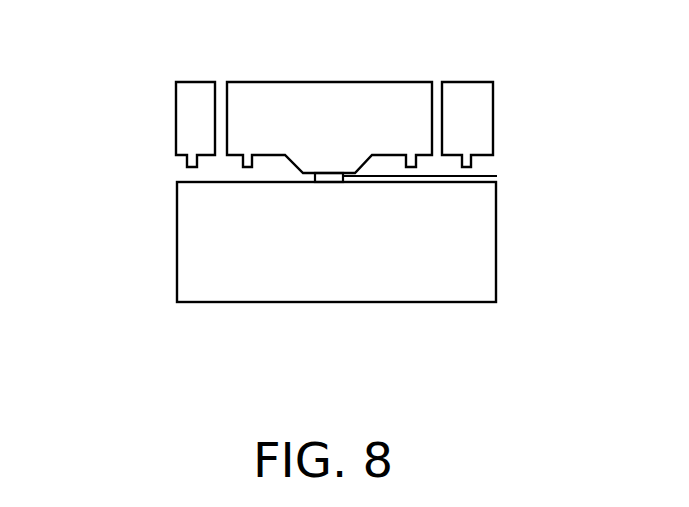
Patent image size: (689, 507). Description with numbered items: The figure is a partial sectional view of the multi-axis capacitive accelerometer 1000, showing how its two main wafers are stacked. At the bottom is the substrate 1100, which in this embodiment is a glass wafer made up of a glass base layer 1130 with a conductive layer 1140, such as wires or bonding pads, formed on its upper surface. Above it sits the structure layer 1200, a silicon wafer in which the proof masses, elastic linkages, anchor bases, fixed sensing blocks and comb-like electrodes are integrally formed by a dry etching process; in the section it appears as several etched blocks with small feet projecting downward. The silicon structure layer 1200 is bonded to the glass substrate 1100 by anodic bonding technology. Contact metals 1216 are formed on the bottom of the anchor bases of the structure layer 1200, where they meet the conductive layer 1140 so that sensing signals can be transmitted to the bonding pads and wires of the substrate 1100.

The multi-axis capacitive accelerometer 1000 is at (620, 51).
The structure layer 1200 is at (166, 113).
The contact metals 1216 is at (333, 174).
The substrate 1100 is at (166, 235).
The conductive layer 1140 is at (497, 180).
The glass base layer 1130 is at (487, 250).